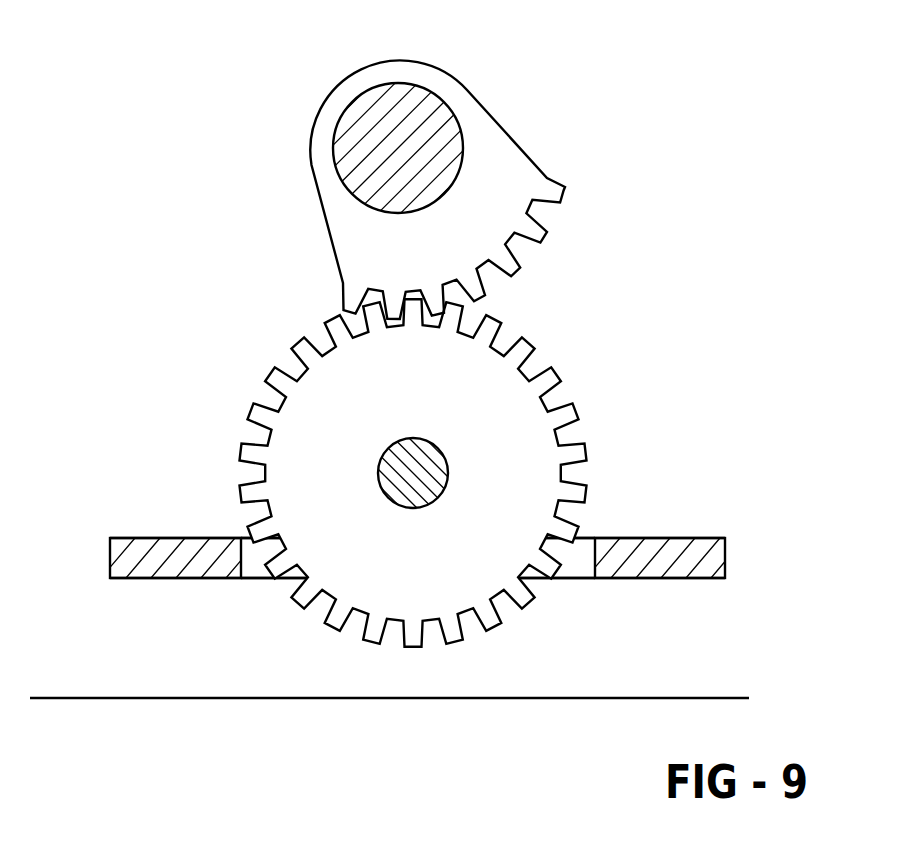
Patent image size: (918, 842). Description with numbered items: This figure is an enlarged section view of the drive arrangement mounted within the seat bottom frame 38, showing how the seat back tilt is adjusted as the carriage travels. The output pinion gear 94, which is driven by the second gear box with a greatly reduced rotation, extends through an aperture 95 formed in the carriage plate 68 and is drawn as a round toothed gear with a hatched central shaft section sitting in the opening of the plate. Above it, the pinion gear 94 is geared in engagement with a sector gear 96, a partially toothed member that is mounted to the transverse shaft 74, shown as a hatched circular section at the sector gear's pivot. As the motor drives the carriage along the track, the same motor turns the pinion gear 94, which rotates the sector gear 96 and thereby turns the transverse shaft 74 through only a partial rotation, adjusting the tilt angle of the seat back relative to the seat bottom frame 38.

The seat bottom frame 38 is at (712, 698).
The carriage plate 68 is at (728, 555).
The transverse shaft 74 is at (466, 151).
The output pinion gear 94 is at (590, 453).
The aperture 95 is at (584, 562).
The sector gear 96 is at (311, 160).